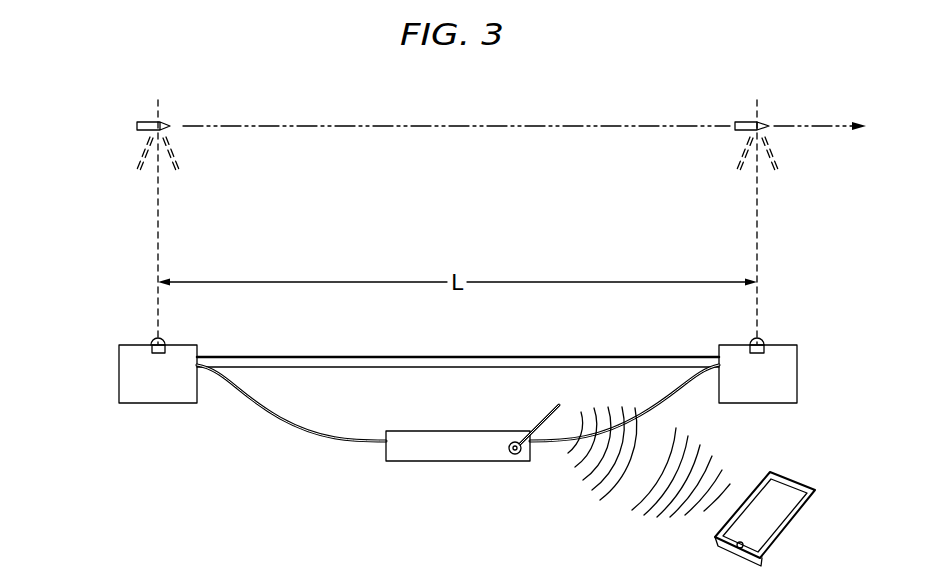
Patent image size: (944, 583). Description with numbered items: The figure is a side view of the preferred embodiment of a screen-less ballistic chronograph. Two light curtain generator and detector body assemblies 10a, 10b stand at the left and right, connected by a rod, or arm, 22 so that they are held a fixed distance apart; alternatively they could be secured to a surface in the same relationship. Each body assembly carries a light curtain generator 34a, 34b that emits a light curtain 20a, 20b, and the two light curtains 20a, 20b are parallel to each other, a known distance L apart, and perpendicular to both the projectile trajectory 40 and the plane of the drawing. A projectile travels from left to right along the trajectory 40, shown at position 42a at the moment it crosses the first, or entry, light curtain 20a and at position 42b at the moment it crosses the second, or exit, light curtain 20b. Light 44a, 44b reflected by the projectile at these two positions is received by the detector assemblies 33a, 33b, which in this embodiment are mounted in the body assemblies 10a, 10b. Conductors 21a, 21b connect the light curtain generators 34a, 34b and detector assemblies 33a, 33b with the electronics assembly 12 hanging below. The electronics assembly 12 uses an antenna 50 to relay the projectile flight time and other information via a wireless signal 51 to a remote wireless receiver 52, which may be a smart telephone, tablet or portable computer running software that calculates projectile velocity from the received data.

The light curtain generator and detector body assembly 10a is at (108, 358).
The light curtain generator and detector body assembly 10b is at (810, 357).
The electronics assembly 12 is at (416, 474).
The light curtain 20a is at (157, 257).
The light curtain 20b is at (759, 251).
The conductor 21a is at (262, 416).
The conductor 21b is at (698, 396).
The rod 22 is at (407, 356).
The detector assembly 33a is at (145, 334).
The detector assembly 33b is at (738, 334).
The light curtain generator 34a is at (166, 347).
The light curtain generator 34b is at (766, 347).
The projectile trajectory 40 is at (815, 125).
The projectile position 42a is at (151, 122).
The projectile position 42b is at (766, 126).
The reflected light 44a is at (136, 158).
The reflected light 44b is at (780, 158).
The antenna 50 is at (540, 418).
The wireless signal 51 is at (618, 493).
The remote wireless receiver 52 is at (806, 478).